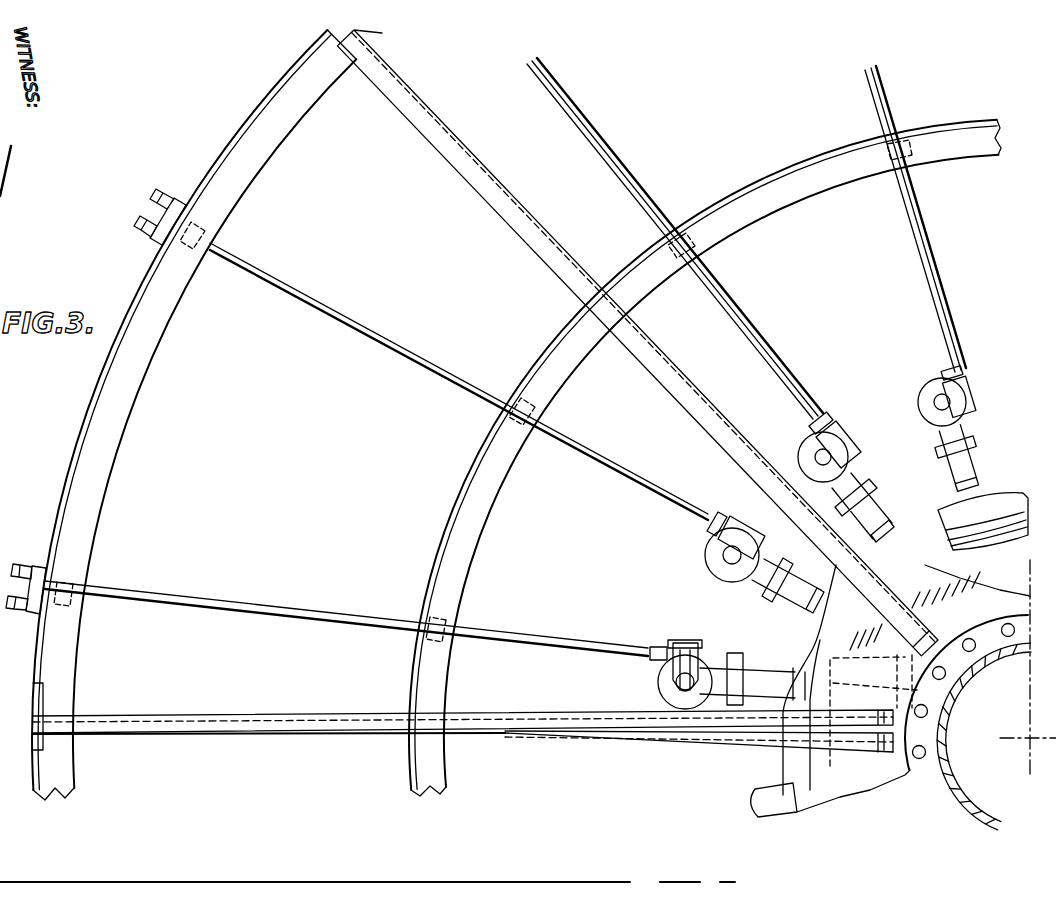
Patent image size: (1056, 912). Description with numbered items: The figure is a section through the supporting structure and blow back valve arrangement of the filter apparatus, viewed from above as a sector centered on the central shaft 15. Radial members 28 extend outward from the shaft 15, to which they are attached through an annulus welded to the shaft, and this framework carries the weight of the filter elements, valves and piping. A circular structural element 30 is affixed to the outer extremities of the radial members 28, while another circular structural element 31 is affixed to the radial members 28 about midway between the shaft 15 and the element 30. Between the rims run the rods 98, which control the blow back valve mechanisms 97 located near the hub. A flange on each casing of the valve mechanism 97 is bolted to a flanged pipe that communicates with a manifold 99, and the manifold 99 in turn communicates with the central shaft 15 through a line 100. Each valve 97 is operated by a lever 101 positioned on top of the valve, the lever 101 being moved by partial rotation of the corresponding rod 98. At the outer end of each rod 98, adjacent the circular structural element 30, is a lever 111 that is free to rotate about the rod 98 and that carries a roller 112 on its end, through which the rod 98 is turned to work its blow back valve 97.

The shaft 15 is at (960, 795).
The radial members 28 is at (724, 390).
The circular structural element 30 is at (242, 181).
The circular structural element 31 is at (548, 344).
The valve mechanism 97 is at (922, 384).
The rods 98 is at (443, 380).
The manifold 99 is at (1003, 497).
The line 100 is at (860, 657).
The lever 101 is at (716, 656).
The lever 111 is at (166, 206).
The roller 112 is at (126, 251).